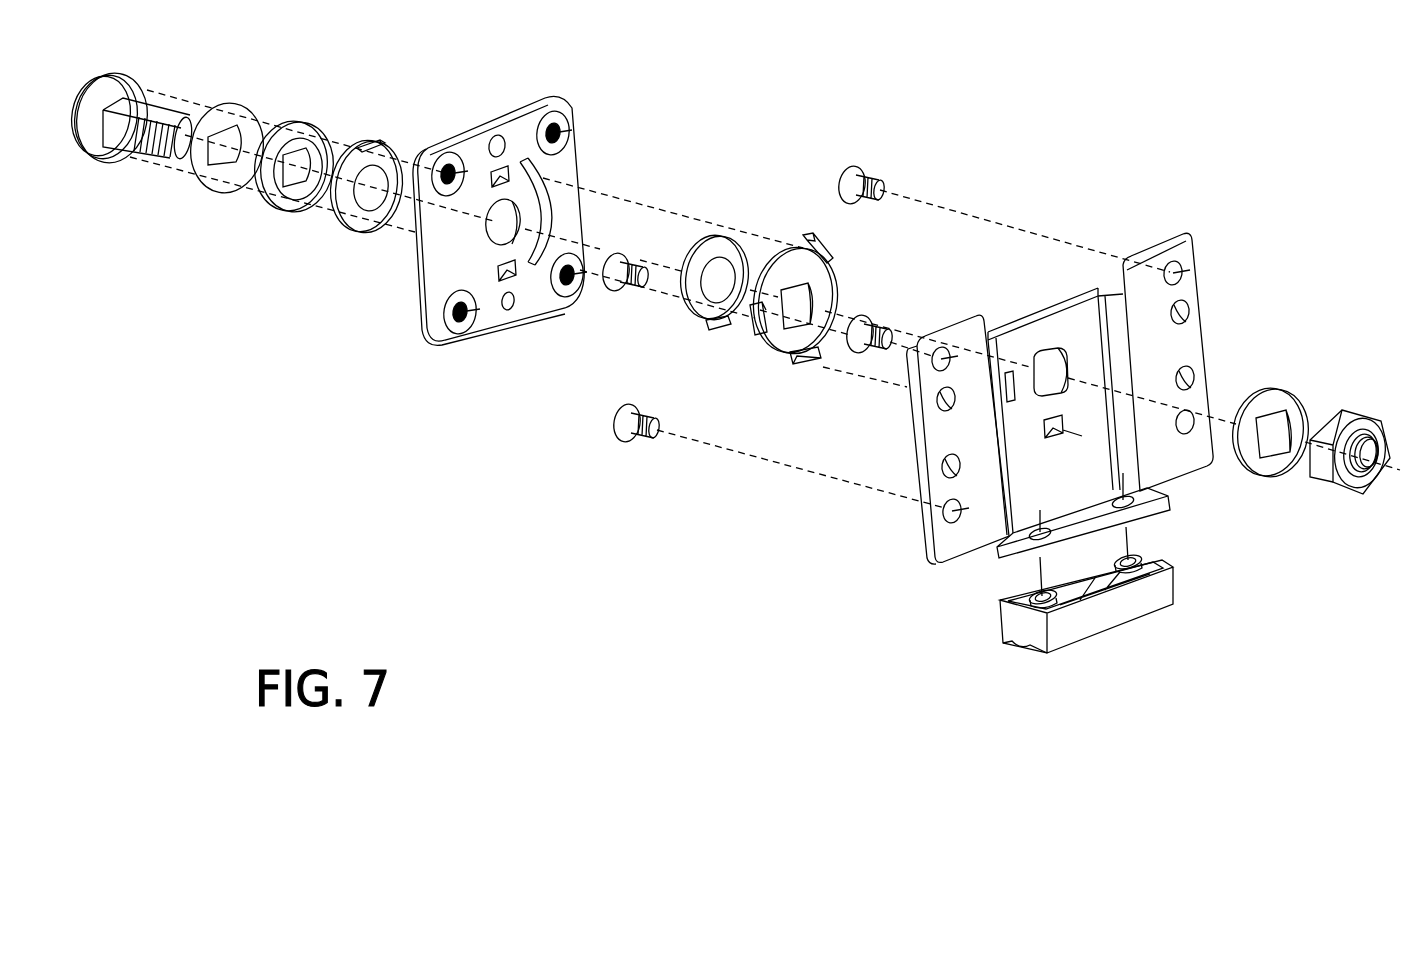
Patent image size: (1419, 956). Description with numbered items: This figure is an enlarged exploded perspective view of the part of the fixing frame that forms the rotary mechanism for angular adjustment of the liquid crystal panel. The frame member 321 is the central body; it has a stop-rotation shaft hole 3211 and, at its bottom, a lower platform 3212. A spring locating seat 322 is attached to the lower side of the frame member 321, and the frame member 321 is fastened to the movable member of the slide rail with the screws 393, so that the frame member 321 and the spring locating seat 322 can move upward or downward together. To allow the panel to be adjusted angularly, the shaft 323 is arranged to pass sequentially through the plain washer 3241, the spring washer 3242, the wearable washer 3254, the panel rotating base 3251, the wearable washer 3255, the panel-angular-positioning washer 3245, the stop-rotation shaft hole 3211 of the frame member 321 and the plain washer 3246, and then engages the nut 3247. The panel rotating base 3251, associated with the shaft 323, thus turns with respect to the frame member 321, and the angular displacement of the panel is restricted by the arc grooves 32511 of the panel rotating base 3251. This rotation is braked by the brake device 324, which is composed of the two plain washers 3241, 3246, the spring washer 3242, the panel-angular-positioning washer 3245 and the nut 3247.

The shaft 323 is at (107, 148).
The plain washer 3241 is at (208, 175).
The spring washer 3242 is at (280, 198).
The wearable washer 3254 is at (357, 223).
The panel rotating base 3251 is at (427, 333).
The arc groove 32511 is at (514, 278).
The wearable washer 3255 is at (715, 248).
The panel-angular-positioning washer 3245 is at (792, 338).
The screw 393 is at (608, 285).
The frame member 321 is at (958, 548).
The stop-rotation shaft hole 3211 is at (1043, 352).
The lower platform 3212 is at (1127, 517).
The spring locating seat 322 is at (1133, 620).
The plain washer 3246 is at (1252, 410).
The nut 3247 is at (1327, 427).
The brake device 324 is at (284, 417).